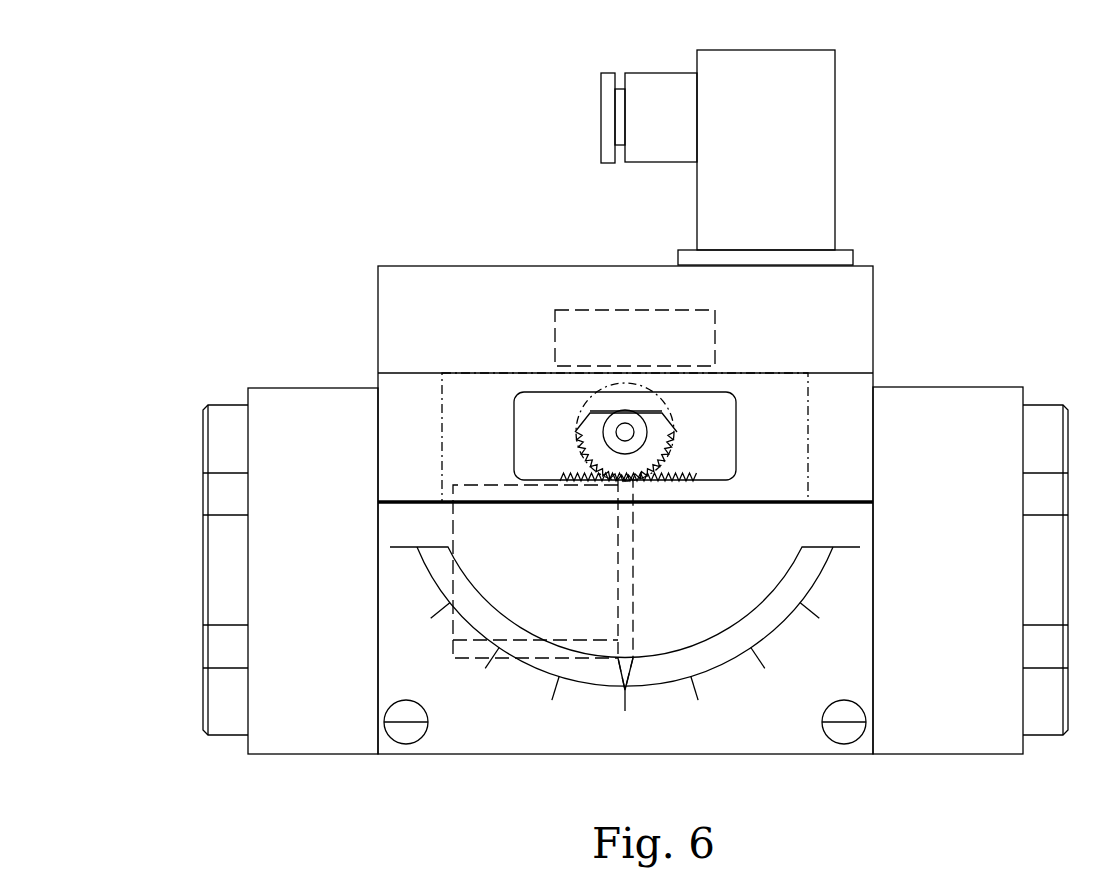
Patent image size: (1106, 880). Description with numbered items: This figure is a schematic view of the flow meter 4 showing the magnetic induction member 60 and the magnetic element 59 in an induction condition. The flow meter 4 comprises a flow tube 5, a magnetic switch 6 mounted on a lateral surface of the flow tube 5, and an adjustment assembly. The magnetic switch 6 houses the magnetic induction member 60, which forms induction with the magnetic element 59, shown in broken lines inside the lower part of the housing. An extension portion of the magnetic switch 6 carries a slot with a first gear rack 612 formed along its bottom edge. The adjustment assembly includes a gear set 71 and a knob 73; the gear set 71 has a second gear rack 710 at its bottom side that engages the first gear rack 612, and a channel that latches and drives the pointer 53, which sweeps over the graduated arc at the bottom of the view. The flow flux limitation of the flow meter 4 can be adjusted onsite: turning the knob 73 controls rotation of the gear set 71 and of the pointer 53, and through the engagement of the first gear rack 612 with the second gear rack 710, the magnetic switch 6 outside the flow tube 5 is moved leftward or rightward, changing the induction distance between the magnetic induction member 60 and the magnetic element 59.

The flow meter 4 is at (983, 175).
The flow tube 5 is at (1012, 372).
The magnetic switch 6 is at (883, 262).
The magnetic induction member 60 is at (602, 308).
The knob 73 is at (673, 420).
The gear set 71 is at (645, 457).
The second gear rack 710 is at (672, 443).
The first gear rack 612 is at (582, 482).
The magnetic element 59 is at (477, 657).
The pointer 53 is at (627, 673).